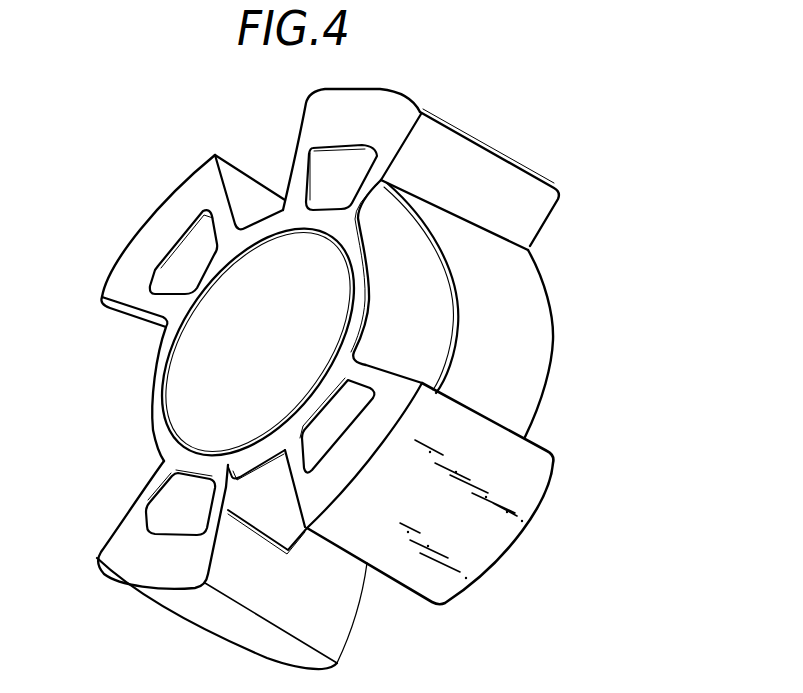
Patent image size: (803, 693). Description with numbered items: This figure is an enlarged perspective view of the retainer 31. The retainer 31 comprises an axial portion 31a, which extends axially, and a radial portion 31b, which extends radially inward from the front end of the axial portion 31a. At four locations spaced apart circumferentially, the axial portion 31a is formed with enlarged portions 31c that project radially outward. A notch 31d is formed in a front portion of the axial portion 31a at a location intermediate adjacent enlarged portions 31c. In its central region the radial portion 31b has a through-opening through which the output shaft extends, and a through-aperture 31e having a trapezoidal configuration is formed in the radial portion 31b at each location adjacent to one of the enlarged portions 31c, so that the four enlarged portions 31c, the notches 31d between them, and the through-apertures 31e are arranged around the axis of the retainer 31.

The retainer 31 is at (586, 322).
The axial portion 31a is at (527, 390).
The radial portion 31b is at (157, 396).
The enlarged portion 31c is at (490, 150).
The notch 31d is at (376, 292).
The through-aperture 31e is at (323, 162).